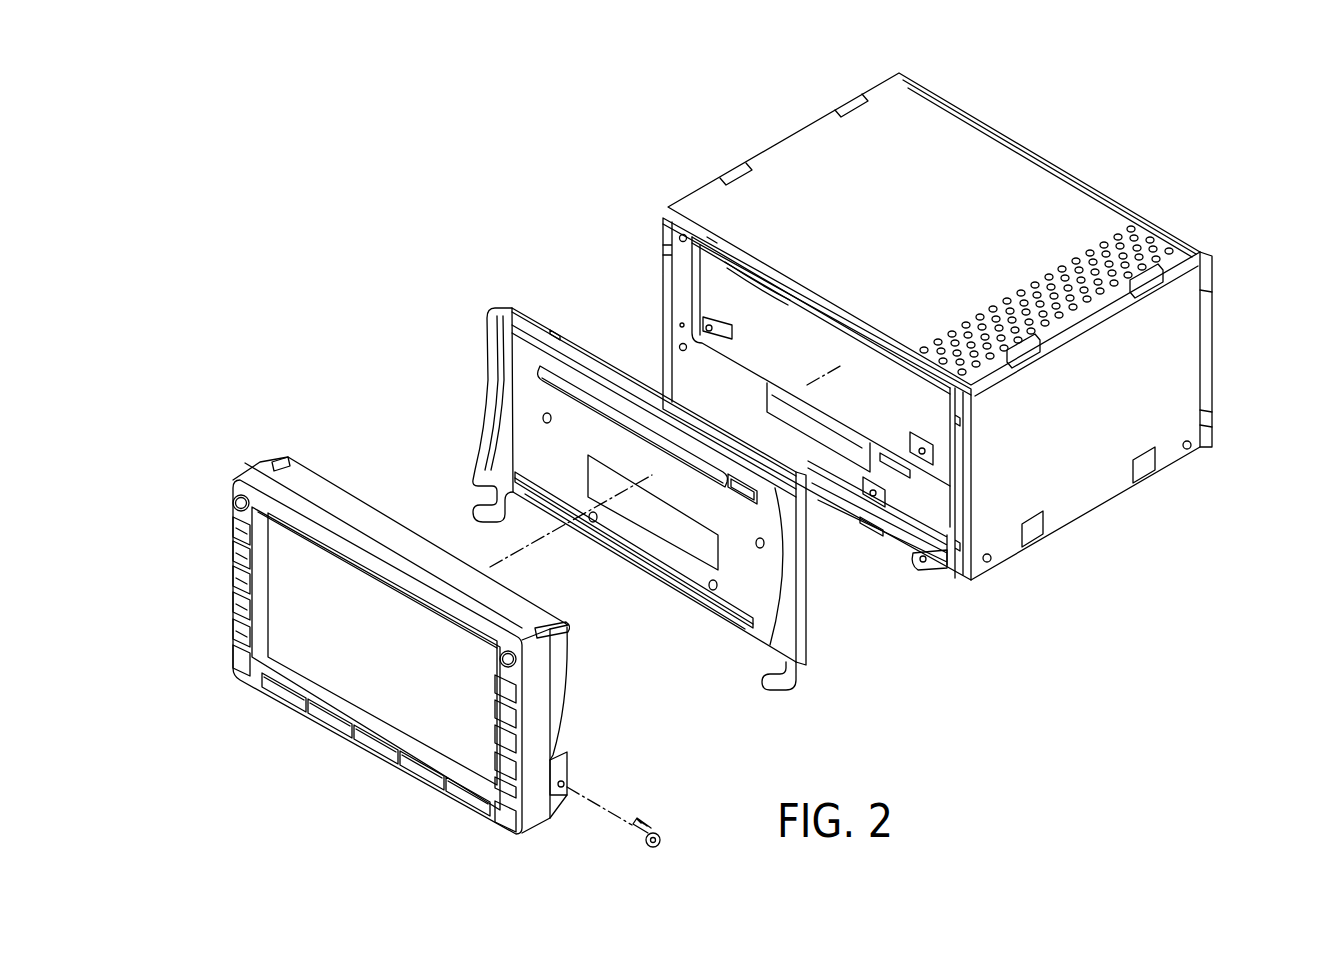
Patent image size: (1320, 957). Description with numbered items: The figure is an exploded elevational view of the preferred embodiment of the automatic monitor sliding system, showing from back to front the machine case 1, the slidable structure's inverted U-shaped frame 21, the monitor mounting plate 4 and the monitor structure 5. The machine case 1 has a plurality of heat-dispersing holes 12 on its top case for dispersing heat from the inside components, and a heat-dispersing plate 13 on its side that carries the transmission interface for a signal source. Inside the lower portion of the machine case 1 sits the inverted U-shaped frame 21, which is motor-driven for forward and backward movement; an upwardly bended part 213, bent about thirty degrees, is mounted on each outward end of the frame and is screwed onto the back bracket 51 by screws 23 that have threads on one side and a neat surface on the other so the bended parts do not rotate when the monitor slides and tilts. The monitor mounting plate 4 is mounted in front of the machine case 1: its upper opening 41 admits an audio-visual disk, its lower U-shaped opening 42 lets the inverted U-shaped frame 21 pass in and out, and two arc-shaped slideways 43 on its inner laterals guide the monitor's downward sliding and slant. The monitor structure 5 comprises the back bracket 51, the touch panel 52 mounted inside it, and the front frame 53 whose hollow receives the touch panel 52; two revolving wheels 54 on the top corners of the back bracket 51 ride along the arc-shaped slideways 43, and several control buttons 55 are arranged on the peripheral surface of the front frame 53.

The machine case 1 is at (966, 326).
The heat-dispersing holes 12 is at (1132, 243).
The heat-dispersing plate 13 is at (1212, 343).
The inverted U-shaped frame 21 is at (909, 550).
The upwardly bended part 213 is at (933, 560).
The screws 23 is at (668, 833).
The monitor mounting plate 4 is at (611, 463).
The opening 41 is at (600, 405).
The U-shaped opening 42 is at (677, 583).
The arc-shaped slideways 43 is at (498, 352).
The monitor structure 5 is at (393, 603).
The back bracket 51 is at (255, 478).
The touch panel 52 is at (285, 588).
The front frame 53 is at (240, 483).
The revolving wheels 54 is at (280, 470).
The control buttons 55 is at (237, 613).